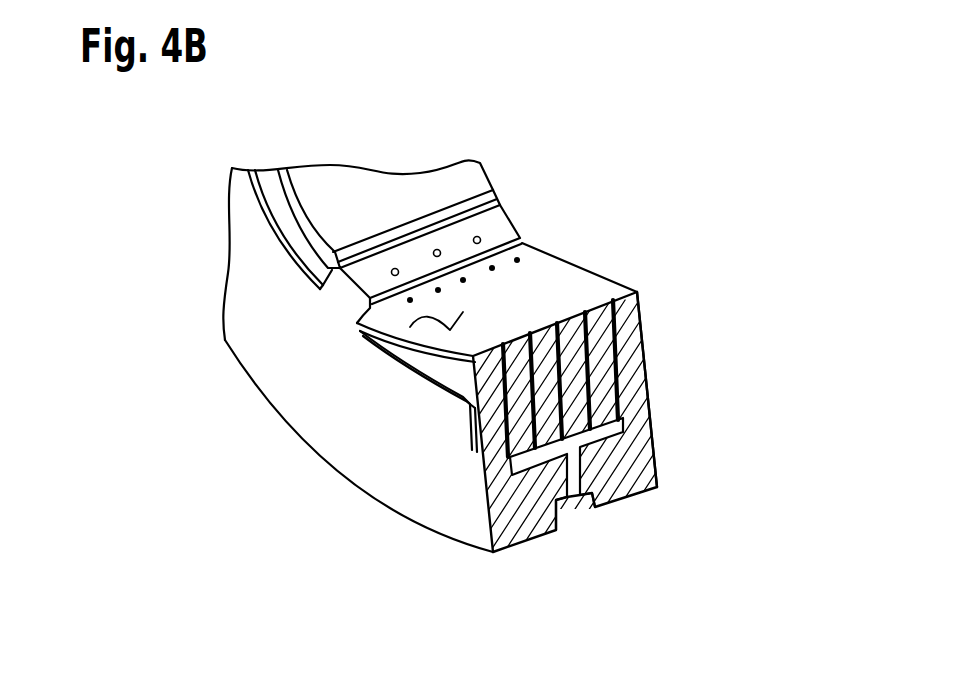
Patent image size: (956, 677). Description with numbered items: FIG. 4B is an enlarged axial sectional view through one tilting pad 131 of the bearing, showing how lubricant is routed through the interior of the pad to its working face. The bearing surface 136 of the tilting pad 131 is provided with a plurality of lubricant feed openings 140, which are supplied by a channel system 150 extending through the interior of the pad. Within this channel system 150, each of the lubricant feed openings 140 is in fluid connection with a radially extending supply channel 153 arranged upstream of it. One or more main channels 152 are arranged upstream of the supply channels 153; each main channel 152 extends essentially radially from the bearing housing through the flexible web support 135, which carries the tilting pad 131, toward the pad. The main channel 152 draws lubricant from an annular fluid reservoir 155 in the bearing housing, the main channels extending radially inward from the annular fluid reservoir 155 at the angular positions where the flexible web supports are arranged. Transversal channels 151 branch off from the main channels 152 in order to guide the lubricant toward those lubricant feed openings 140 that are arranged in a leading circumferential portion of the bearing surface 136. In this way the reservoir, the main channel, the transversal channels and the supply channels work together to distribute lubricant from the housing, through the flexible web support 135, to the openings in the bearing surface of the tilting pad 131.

The tilting pad 131 is at (418, 375).
The flexible web support 135 is at (467, 430).
The bearing surface 136 is at (410, 327).
The lubricant feed openings 140 is at (612, 342).
The channel system 150 is at (645, 384).
The transversal channels 151 is at (596, 337).
The main channel 152 is at (622, 393).
The supply channel 153 is at (640, 317).
The annular fluid reservoir 155 is at (563, 515).